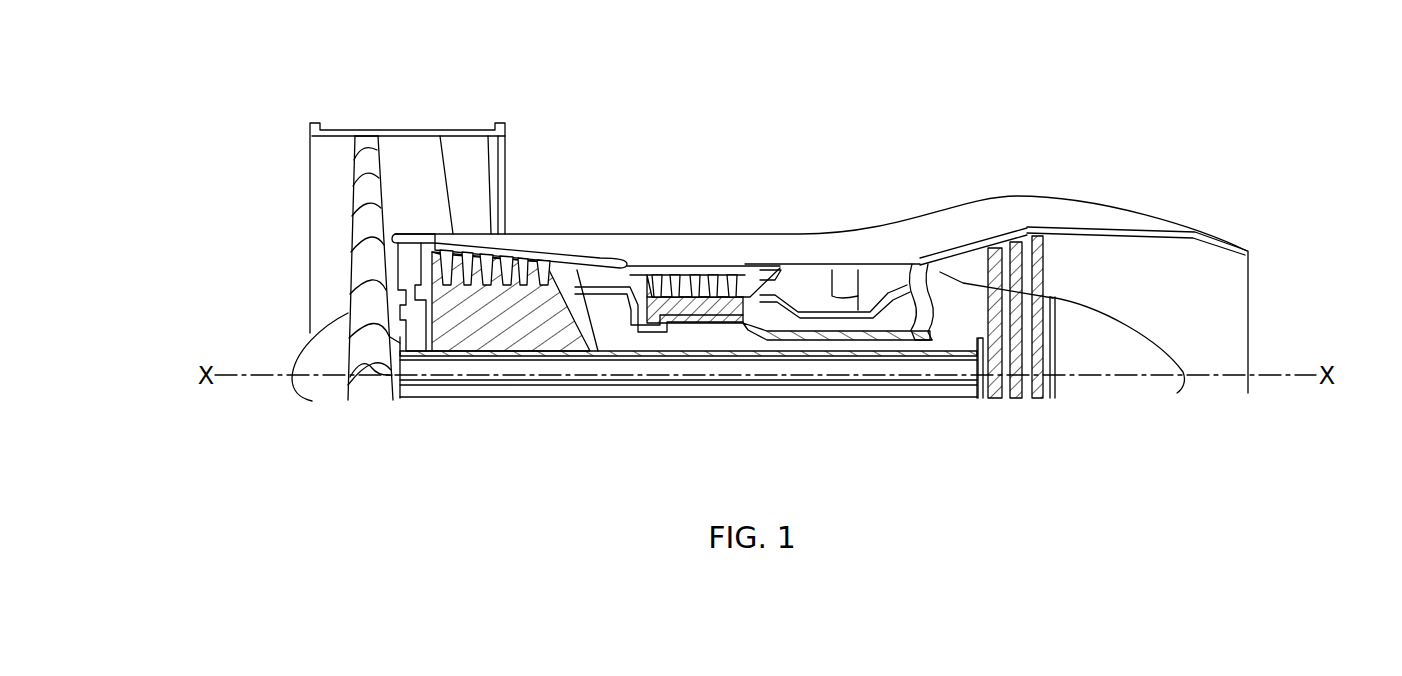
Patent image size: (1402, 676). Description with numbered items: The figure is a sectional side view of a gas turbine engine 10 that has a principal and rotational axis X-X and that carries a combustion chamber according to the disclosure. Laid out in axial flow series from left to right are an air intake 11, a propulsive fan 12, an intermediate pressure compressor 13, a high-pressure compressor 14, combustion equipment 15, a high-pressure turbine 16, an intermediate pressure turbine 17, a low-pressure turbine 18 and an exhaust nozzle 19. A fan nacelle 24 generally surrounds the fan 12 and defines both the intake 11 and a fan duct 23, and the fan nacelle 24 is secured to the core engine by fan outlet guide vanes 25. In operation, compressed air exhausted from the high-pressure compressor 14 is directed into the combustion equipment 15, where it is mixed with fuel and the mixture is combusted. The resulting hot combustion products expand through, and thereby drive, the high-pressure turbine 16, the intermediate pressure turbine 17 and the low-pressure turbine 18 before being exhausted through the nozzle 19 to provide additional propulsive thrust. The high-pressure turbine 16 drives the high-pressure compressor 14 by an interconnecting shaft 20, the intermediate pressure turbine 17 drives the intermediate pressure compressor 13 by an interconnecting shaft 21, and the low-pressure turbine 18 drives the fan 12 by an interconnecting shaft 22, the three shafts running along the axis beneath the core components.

The gas turbine engine 10 is at (667, 158).
The air intake 11 is at (288, 250).
The propulsive fan 12 is at (375, 160).
The intermediate pressure compressor 13 is at (505, 295).
The high-pressure compressor 14 is at (697, 278).
The combustion equipment 15 is at (845, 260).
The high-pressure turbine 16 is at (920, 270).
The intermediate pressure turbine 17 is at (962, 255).
The low-pressure turbine 18 is at (1042, 250).
The exhaust nozzle 19 is at (1235, 322).
The interconnecting shaft 20 is at (905, 333).
The interconnecting shaft 21 is at (647, 357).
The interconnecting shaft 22 is at (538, 397).
The fan duct 23 is at (423, 166).
The fan nacelle 24 is at (339, 124).
The fan outlet guide vanes 25 is at (495, 163).